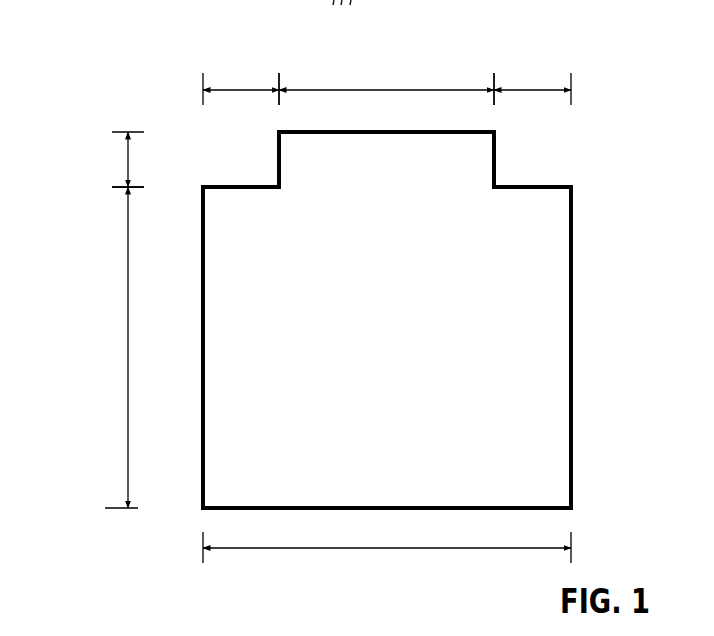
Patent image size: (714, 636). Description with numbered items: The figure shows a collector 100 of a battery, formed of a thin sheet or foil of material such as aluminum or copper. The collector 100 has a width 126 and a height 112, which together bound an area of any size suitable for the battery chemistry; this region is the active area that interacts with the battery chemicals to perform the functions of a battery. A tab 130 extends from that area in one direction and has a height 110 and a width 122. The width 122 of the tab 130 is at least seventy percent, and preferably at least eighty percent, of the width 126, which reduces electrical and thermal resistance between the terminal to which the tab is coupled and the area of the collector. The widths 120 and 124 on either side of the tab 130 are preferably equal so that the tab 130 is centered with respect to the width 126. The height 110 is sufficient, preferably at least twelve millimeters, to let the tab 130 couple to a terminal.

The collector 100 is at (102, 78).
The height of tab 110 is at (126, 160).
The height of collector 112 is at (126, 330).
The width 120 is at (241, 88).
The width of tab 122 is at (386, 88).
The width 124 is at (534, 88).
The width of collector 126 is at (392, 552).
The tab 130 is at (497, 148).